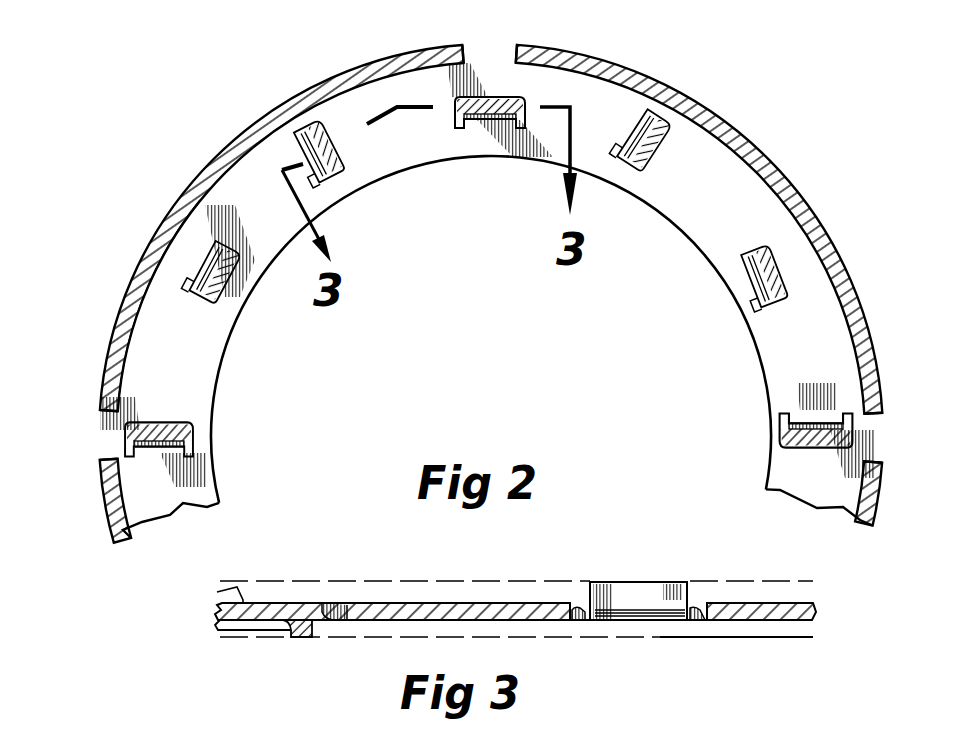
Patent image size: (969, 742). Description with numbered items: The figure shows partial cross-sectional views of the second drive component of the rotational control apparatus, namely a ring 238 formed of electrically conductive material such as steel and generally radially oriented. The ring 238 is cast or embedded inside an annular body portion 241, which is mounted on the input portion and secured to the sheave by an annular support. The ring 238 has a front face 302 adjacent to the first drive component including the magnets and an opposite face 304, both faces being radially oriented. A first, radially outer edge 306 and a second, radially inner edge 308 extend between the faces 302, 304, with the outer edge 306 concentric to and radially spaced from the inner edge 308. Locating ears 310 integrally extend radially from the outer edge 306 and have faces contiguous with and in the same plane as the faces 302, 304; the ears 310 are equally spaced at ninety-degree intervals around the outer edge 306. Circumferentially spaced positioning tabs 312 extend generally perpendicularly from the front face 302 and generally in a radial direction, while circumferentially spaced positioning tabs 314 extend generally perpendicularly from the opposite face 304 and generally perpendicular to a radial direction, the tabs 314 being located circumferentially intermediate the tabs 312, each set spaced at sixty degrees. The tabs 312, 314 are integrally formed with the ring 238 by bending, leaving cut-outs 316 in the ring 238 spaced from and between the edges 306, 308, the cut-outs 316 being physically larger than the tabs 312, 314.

In FIG. 2, the ring 238 is at (416, 193).
In FIG. 3, the ring 238 is at (421, 590).
In FIG. 2, the annular body portion 241 is at (750, 143).
In FIG. 3, the annular body portion 241 is at (477, 581).
In FIG. 2, the front face 302 is at (197, 359).
In FIG. 3, the front face 302 is at (220, 628).
In FIG. 3, the opposite face 304 is at (243, 597).
In FIG. 2, the radially outer edge 306 is at (113, 345).
In FIG. 2, the radially inner edge 308 is at (228, 351).
In FIG. 2, the locating ears 310 is at (481, 43).
In FIG. 2, the positioning tabs 312 is at (320, 182).
In FIG. 3, the positioning tabs 312 is at (293, 638).
In FIG. 2, the positioning tabs 314 is at (498, 117).
In FIG. 3, the positioning tabs 314 is at (638, 590).
In FIG. 2, the cut-outs 316 is at (478, 100).
In FIG. 3, the cut-outs 316 is at (320, 605).